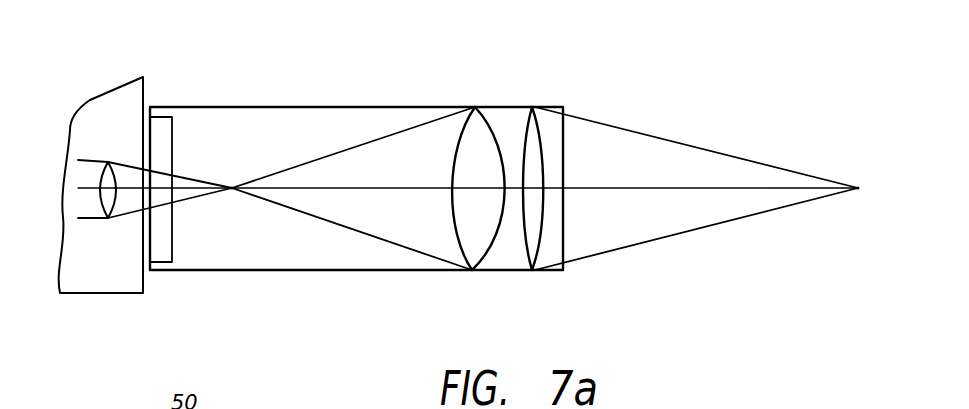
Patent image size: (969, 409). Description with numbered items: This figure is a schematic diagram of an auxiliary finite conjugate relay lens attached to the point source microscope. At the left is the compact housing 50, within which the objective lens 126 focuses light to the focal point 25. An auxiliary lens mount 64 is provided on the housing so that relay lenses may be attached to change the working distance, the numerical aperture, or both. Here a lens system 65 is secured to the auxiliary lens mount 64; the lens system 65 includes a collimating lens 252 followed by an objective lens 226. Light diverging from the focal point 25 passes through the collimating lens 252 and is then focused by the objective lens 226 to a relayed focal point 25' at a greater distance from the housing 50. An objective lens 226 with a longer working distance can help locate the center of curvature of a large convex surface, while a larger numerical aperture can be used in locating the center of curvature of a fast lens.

The compact housing 50 is at (145, 97).
The objective lens 126 is at (108, 220).
The focal point 25 is at (219, 217).
The lens system 65 is at (332, 272).
The auxiliary lens mount 64 is at (162, 133).
The collimating lens 252 is at (477, 238).
The objective lens 226 is at (528, 270).
The relayed focal point 25' is at (856, 154).